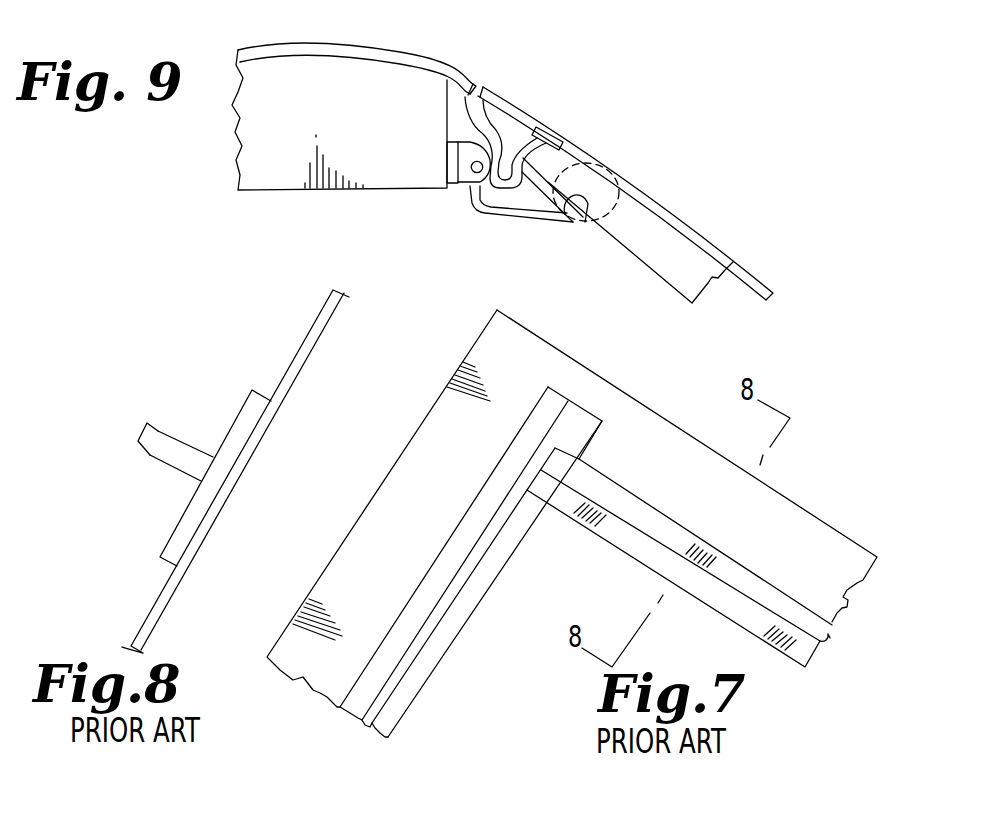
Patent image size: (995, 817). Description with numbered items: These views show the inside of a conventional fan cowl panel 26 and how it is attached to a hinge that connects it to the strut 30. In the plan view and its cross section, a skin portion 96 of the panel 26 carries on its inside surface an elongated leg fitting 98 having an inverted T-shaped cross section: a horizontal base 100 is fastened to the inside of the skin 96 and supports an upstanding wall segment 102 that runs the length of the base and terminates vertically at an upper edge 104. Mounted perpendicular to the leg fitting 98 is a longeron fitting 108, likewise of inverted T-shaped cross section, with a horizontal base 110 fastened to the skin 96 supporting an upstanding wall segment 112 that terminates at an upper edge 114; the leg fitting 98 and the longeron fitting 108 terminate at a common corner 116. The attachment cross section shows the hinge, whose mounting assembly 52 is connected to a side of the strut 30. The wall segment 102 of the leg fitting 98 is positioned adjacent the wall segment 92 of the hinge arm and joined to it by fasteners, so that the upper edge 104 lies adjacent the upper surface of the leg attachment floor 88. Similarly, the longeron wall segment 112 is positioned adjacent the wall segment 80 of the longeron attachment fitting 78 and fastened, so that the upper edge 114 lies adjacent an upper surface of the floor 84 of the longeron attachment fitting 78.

In FIG. 9, the fan cowl panel 26 is at (535, 109).
In FIG. 8, the fan cowl panel 26 is at (188, 577).
In FIG. 7, the fan cowl panel 26 is at (645, 402).
In FIG. 9, the strut 30 is at (418, 62).
In FIG. 9, the mounting assembly 52 is at (467, 157).
In FIG. 9, the longeron attachment fitting 78 is at (468, 93).
In FIG. 9, the wall segment of the longeron attachment fitting 80 is at (502, 113).
In FIG. 9, the floor of the longeron attachment fitting 84 is at (512, 208).
In FIG. 9, the leg attachment floor 88 is at (577, 217).
In FIG. 9, the wall segment of the hinge arm 92 is at (586, 188).
In FIG. 7, the skin portion 96 is at (660, 470).
In FIG. 7, the leg fitting 98 is at (727, 553).
In FIG. 8, the horizontal base of the leg fitting 100 is at (183, 510).
In FIG. 7, the horizontal base of the leg fitting 100 is at (740, 587).
In FIG. 9, the upstanding wall segment of the leg fitting 102 is at (672, 245).
In FIG. 8, the upstanding wall segment of the leg fitting 102 is at (177, 447).
In FIG. 7, the upstanding wall segment of the leg fitting 102 is at (832, 633).
In FIG. 8, the upper edge of the leg wall segment 104 is at (141, 428).
In FIG. 7, the longeron fitting 108 is at (447, 540).
In FIG. 9, the horizontal base of the longeron fitting 110 is at (546, 126).
In FIG. 7, the horizontal base of the longeron fitting 110 is at (470, 517).
In FIG. 9, the upstanding wall segment of the longeron fitting 112 is at (552, 157).
In FIG. 7, the upstanding wall segment of the longeron fitting 112 is at (442, 593).
In FIG. 7, the upper edge of the longeron wall segment 114 is at (529, 480).
In FIG. 7, the common corner 116 is at (546, 406).